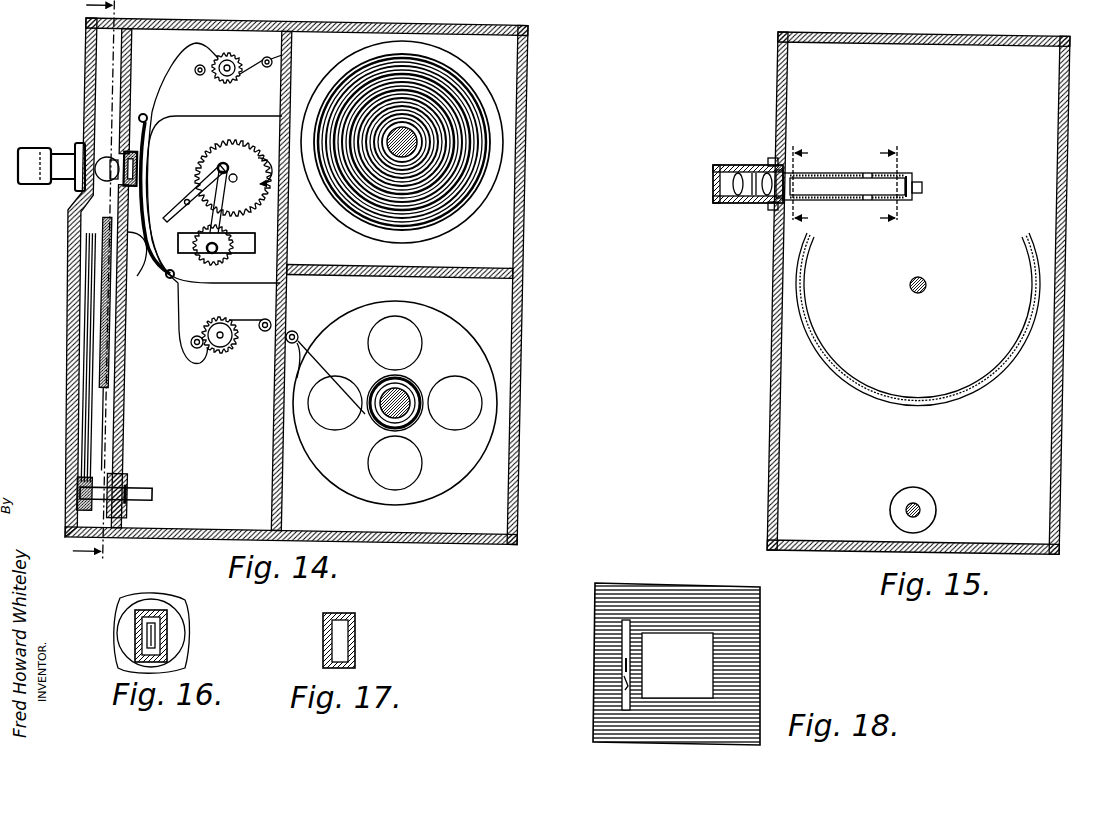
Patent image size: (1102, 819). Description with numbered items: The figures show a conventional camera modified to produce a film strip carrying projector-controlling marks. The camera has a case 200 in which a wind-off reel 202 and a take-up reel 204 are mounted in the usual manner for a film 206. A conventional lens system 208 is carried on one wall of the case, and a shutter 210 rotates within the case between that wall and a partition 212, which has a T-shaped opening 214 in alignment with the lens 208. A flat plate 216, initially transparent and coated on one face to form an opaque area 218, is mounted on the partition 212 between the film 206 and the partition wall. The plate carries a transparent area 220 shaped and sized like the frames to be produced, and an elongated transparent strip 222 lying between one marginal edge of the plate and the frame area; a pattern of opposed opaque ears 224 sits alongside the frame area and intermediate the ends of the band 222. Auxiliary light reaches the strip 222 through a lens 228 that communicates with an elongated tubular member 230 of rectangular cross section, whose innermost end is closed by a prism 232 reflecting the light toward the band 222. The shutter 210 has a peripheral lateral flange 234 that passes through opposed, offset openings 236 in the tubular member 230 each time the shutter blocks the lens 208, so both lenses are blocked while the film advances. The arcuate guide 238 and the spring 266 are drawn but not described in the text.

In FIG. 14, the case 200 is at (287, 290).
In FIG. 15, the case 200 is at (918, 282).
In FIG. 14, the wind-off reel 202 is at (472, 197).
In FIG. 14, the take-up reel 204 is at (483, 427).
In FIG. 14, the film 206 is at (308, 340).
In FIG. 14, the lens system 208 is at (38, 183).
In FIG. 14, the shutter 210 is at (101, 343).
In FIG. 14, the partition 212 is at (123, 422).
In FIG. 16, the partition 212 is at (188, 606).
In FIG. 14, the opening 214 is at (142, 175).
In FIG. 15, the opening 214 is at (922, 188).
In FIG. 14, the flat plate 216 is at (143, 166).
In FIG. 16, the flat plate 216 is at (154, 643).
In FIG. 18, the flat plate 216 is at (762, 655).
In FIG. 18, the opaque area 218 is at (674, 603).
In FIG. 18, the transparent area 220 is at (671, 690).
In FIG. 18, the transparent area 222 is at (620, 637).
In FIG. 18, the opaque ears 224 is at (622, 692).
In FIG. 15, the lens 228 is at (746, 203).
In FIG. 14, the tubular member 230 is at (105, 160).
In FIG. 15, the tubular member 230 is at (844, 172).
In FIG. 16, the tubular member 230 is at (167, 631).
In FIG. 17, the tubular member 230 is at (356, 637).
In FIG. 15, the prism 232 is at (921, 181).
In FIG. 14, the peripheral lateral flange 234 is at (107, 392).
In FIG. 15, the offset openings 236 is at (879, 173).
In FIG. 15, the arcuate guide track 238 is at (880, 399).
In FIG. 18, the spring 266 is at (622, 665).